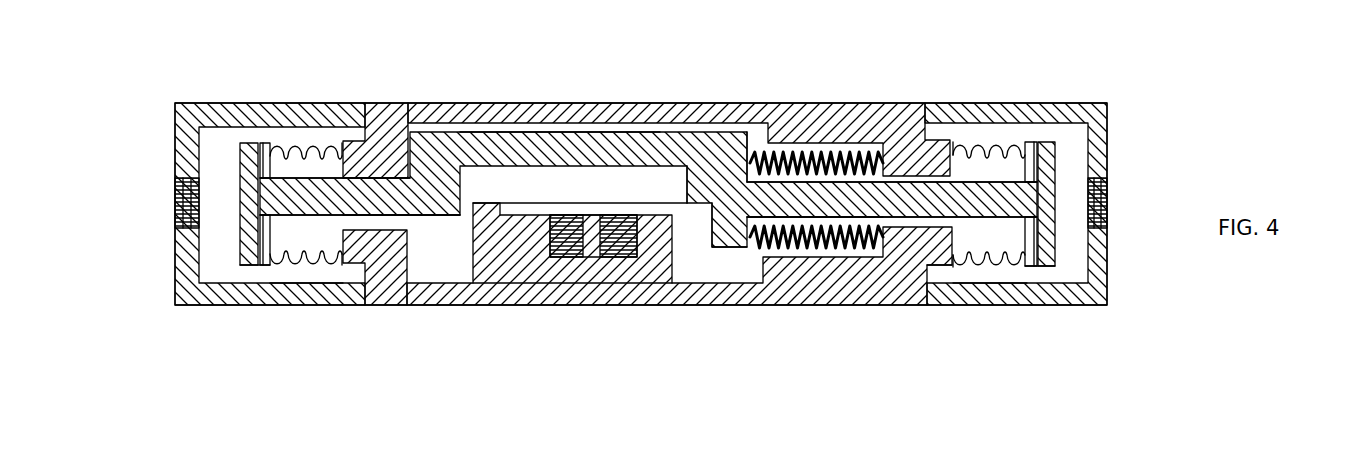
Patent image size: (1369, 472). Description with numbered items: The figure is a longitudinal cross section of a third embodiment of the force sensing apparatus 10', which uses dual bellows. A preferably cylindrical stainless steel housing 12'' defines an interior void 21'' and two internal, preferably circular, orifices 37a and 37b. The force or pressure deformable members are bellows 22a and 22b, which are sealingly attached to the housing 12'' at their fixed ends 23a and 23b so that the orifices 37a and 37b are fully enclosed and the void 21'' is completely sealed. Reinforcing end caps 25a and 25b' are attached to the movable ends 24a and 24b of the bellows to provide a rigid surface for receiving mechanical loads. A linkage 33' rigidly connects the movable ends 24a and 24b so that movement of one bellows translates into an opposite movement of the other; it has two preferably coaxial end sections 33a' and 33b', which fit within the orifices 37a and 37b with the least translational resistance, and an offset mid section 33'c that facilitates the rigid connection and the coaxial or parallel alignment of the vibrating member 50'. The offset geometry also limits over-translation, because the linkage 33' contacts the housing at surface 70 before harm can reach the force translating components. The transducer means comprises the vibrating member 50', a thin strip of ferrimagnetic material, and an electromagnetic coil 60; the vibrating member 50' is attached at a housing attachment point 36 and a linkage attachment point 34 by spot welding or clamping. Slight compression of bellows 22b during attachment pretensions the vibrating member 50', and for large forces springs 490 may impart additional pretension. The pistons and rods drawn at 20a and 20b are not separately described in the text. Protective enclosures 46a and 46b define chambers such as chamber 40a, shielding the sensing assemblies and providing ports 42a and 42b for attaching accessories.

The apparatus 10' is at (641, 257).
The housing 12'' is at (679, 229).
The first piston rod 20a is at (333, 158).
The second piston rod 20b is at (955, 152).
The interior void 21'' is at (580, 279).
The bellows 22a is at (306, 265).
The bellows 22b is at (990, 270).
The fixed end 23a is at (337, 262).
The fixed end 23b is at (950, 266).
The movable end 24a is at (254, 263).
The movable end 24b is at (1027, 268).
The reinforcing end cap 25a is at (242, 170).
The reinforcing end cap 25b' is at (1071, 161).
The linkage 33' is at (648, 161).
The end section 33a' is at (306, 109).
The end section 33b' is at (999, 120).
The mid section 33'c is at (630, 110).
The linkage attachment point 34 is at (714, 190).
The housing attachment point 36 is at (485, 197).
The internal orifice 37a is at (405, 223).
The internal orifice 37b is at (892, 222).
The chamber 40a is at (210, 143).
The port 42a is at (176, 214).
The port 42b is at (1112, 193).
The protective enclosure 46a is at (355, 295).
The protective enclosure 46b is at (935, 302).
The vibrating member 50' is at (674, 129).
The electromagnetic coil 60 is at (588, 258).
The surface 70 is at (400, 135).
The springs 490 is at (835, 150).